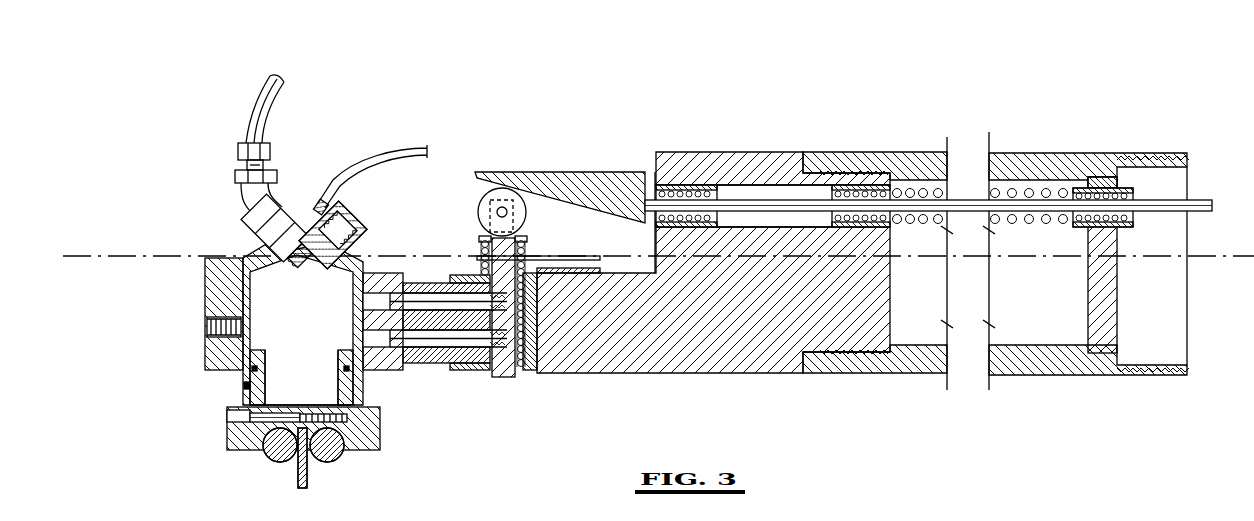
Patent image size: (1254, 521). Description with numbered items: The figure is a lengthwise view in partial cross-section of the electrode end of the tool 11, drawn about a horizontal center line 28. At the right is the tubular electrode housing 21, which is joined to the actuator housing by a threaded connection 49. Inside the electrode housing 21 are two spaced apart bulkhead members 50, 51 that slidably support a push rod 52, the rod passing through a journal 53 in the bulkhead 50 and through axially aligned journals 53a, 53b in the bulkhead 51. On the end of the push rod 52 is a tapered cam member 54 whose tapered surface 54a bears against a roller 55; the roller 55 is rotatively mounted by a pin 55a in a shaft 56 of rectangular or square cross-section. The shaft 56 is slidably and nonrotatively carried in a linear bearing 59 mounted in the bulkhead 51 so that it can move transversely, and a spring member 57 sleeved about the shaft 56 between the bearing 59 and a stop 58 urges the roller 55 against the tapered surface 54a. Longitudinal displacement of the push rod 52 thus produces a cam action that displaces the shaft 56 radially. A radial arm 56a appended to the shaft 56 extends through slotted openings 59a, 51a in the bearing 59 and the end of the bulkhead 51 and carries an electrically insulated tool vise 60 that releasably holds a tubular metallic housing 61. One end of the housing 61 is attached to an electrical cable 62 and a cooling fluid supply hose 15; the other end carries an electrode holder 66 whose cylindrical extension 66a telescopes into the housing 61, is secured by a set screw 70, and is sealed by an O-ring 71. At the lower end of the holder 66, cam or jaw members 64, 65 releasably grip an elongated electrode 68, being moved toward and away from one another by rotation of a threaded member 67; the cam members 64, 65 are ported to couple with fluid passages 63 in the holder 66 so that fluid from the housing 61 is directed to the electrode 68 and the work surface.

The tool 11 is at (813, 108).
The cooling fluid supply hose 15 is at (250, 122).
The tubular electrode housing 21 is at (1035, 153).
The centerline axis 28 is at (95, 258).
The threaded connection 49 is at (1167, 163).
The bulkhead member 50 is at (1105, 298).
The bulkhead member 51 is at (893, 292).
The slotted opening 51a is at (478, 373).
The push rod 52 is at (1193, 213).
The journal 53 is at (1128, 188).
The journal 53a is at (872, 185).
The journal 53b is at (716, 153).
The tapered cam member 54 is at (573, 172).
The tapered surface 54a is at (655, 258).
The roller 55 is at (479, 206).
The pin 55a is at (498, 215).
The shaft 56 is at (477, 257).
The radial arm 56a is at (415, 373).
The spring member 57 is at (527, 257).
The stop 58 is at (520, 238).
The linear bearing 59 is at (535, 376).
The slotted opening 59a is at (510, 378).
The electrically insulated tool vise 60 is at (391, 272).
The tubular metallic housing 61 is at (247, 253).
The electrical cable 62 is at (383, 157).
The fluid passages 63 is at (360, 399).
The cam member 64 is at (270, 456).
The cam member 65 is at (322, 461).
The electrode holder 66 is at (230, 446).
The cylindrical extension 66a is at (275, 357).
The threaded member 67 is at (228, 417).
The elongated electrode 68 is at (300, 470).
The set screw 70 is at (244, 386).
The O-ring 71 is at (258, 370).